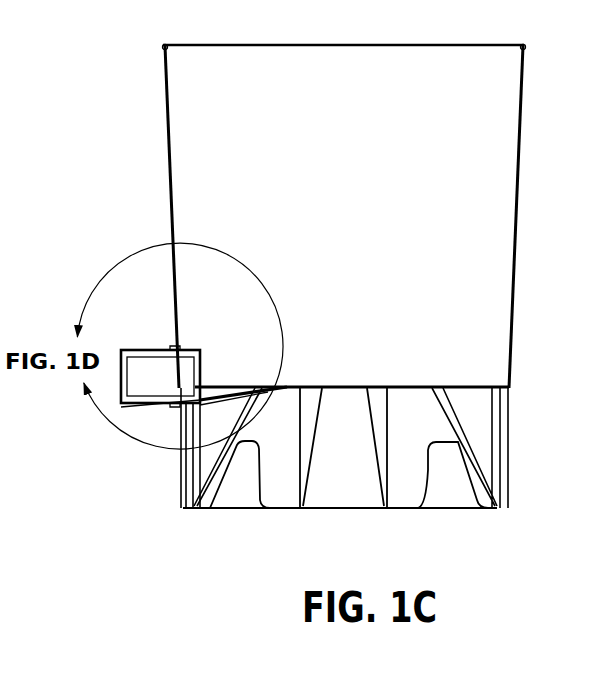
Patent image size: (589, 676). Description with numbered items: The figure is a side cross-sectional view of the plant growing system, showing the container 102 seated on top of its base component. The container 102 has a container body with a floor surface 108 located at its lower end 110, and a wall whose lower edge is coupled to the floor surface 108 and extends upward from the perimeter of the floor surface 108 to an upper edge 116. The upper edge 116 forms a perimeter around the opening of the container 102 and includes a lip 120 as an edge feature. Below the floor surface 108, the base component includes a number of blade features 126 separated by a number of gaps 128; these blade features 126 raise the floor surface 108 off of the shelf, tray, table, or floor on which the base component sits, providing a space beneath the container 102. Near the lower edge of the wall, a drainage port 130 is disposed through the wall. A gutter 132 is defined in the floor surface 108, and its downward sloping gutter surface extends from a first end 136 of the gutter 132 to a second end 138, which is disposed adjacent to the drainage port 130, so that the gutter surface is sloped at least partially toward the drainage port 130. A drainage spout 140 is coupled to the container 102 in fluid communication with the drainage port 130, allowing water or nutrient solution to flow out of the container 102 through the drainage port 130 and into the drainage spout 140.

The container 102 is at (160, 133).
The lip 120 is at (163, 48).
The upper edge 116 is at (530, 50).
The drainage port 130 is at (176, 347).
The second end 138 is at (207, 382).
The gutter 132 is at (230, 378).
The first end 136 is at (275, 378).
The floor surface 108 is at (423, 386).
The lower end 110 is at (512, 383).
The drainage spout 140 is at (155, 408).
The blade features 126 is at (346, 461).
The gaps 128 is at (455, 487).